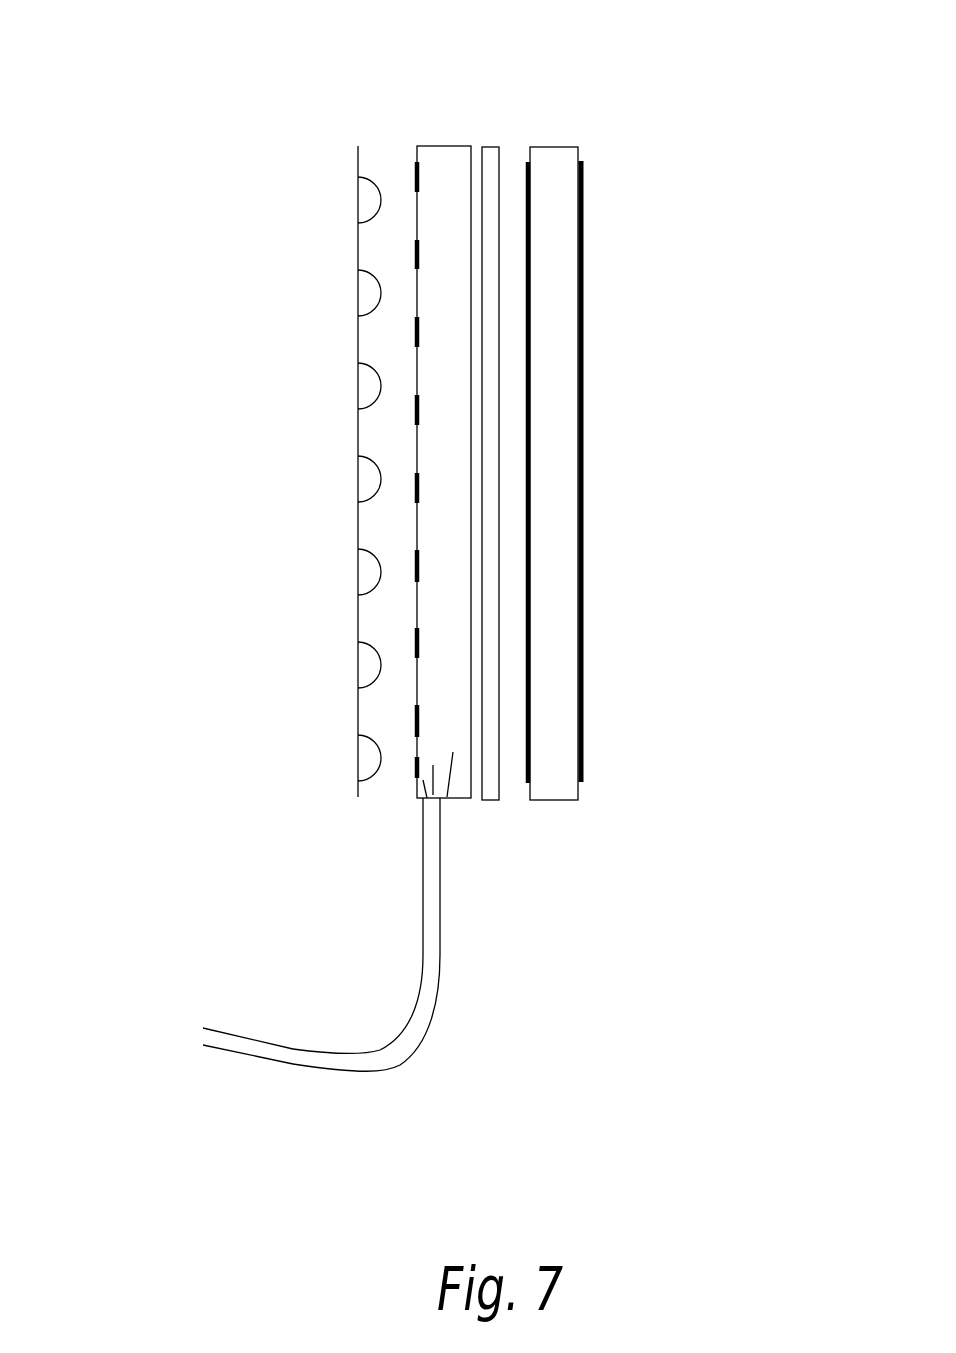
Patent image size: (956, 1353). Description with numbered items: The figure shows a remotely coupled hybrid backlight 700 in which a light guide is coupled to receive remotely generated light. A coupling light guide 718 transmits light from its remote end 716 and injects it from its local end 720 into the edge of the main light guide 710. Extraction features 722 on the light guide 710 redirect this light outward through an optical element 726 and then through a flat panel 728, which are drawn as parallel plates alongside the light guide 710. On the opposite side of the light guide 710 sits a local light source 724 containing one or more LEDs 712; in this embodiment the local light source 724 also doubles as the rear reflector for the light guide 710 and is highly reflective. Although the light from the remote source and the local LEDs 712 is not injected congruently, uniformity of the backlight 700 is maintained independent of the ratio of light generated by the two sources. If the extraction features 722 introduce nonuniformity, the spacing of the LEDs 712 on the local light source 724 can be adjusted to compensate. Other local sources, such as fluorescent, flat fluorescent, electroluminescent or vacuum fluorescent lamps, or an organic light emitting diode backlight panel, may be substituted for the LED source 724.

The remotely coupled hybrid backlight 700 is at (178, 57).
The light guide 710 is at (430, 523).
The LEDs 712 is at (370, 201).
The remote end 716 is at (200, 1040).
The light guide 718 is at (420, 1045).
The local end 720 is at (433, 812).
The extraction features 722 is at (415, 410).
The local light source 724 is at (358, 238).
The optical element 726 is at (490, 157).
The flat panel 728 is at (552, 187).